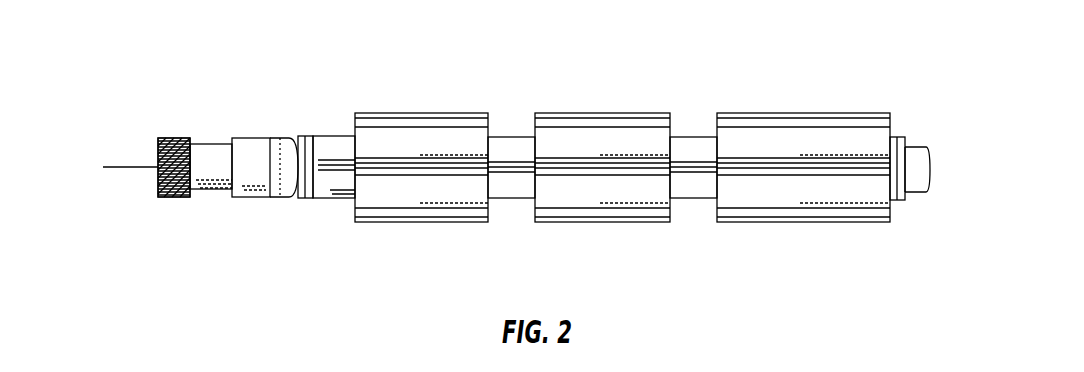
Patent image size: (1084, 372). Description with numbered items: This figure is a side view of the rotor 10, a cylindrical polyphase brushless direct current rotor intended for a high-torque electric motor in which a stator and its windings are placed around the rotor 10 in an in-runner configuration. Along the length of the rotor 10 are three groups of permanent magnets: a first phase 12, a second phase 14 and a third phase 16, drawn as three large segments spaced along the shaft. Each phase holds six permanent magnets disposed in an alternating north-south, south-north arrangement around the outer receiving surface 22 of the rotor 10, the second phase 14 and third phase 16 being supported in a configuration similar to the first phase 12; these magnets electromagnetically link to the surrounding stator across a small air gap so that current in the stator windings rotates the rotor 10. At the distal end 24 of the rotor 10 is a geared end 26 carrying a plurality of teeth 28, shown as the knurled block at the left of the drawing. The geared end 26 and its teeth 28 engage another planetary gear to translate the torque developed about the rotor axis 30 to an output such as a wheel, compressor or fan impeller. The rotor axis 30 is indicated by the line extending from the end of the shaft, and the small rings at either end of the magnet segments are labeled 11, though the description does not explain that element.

The rotor 10 is at (724, 57).
The bearing ring 11 is at (312, 137).
The first phase 12 is at (419, 234).
The second phase 14 is at (599, 234).
The third phase 16 is at (832, 235).
The outer receiving surface 22 is at (512, 137).
The distal end 24 is at (203, 143).
The geared end 26 is at (176, 137).
The teeth 28 is at (181, 198).
The rotor axis 30 is at (112, 168).